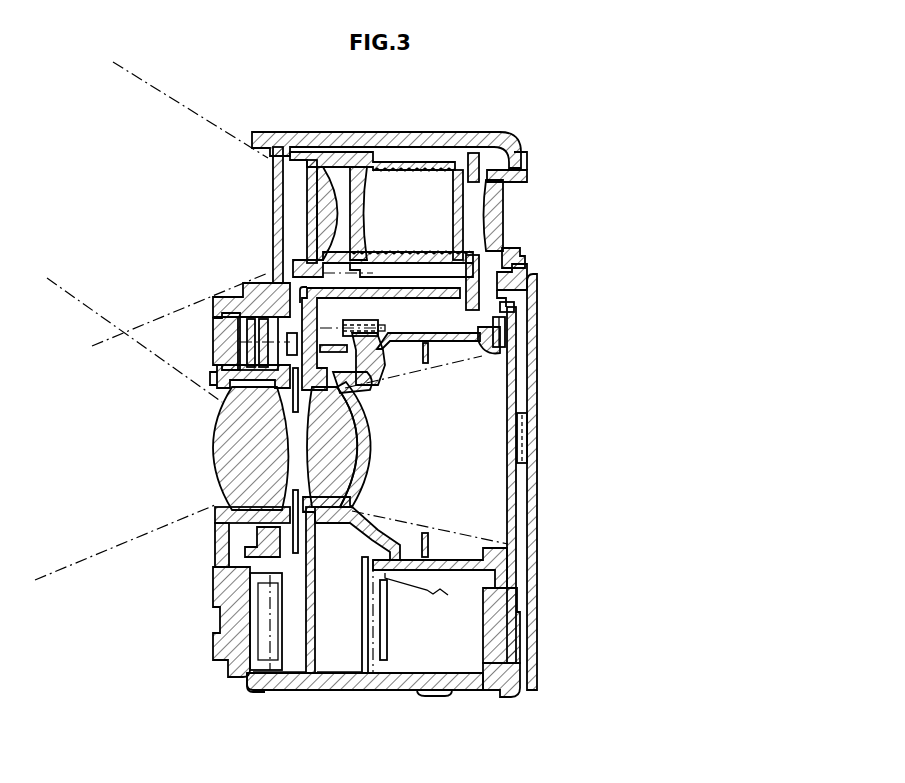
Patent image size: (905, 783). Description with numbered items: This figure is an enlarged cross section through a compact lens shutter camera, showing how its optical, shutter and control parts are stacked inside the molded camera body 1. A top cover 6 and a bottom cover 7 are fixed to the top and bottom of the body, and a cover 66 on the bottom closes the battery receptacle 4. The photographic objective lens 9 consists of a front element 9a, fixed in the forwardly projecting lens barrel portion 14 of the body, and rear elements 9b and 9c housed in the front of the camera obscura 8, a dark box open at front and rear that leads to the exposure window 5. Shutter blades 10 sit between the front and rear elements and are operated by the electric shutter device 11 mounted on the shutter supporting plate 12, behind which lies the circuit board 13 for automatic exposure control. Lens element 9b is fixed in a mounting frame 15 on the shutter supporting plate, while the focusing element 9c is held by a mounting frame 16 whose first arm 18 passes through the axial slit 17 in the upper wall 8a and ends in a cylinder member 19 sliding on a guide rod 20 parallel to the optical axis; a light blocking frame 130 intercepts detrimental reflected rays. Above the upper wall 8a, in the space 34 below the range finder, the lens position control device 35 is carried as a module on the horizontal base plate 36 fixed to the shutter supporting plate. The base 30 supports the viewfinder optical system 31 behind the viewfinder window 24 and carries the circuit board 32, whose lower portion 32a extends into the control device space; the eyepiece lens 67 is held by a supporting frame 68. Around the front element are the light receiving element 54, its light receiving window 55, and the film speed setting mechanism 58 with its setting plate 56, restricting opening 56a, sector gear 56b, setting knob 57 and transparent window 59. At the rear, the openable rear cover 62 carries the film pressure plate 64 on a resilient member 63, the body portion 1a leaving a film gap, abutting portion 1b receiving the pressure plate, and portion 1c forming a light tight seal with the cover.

The camera body 1 is at (522, 652).
The portion 1a is at (506, 332).
The abutting portion 1b is at (515, 307).
The portion 1c is at (521, 265).
The battery receptacle 4 is at (462, 668).
The exposure window 5 is at (508, 552).
The top cover 6 is at (383, 132).
The bottom cover 7 is at (368, 690).
The camera obscura 8 is at (364, 566).
The upper wall 8a is at (432, 342).
The photographic objective lens 9 is at (215, 452).
The front element 9a is at (265, 457).
The rear lens element 9b is at (343, 457).
The rear lens element 9c is at (372, 452).
The shutter blades 10 is at (290, 562).
The electric shutter device 11 is at (337, 656).
The shutter supporting plate 12 is at (305, 646).
The circuit board 13 is at (360, 654).
The lens barrel portion 14 is at (228, 380).
The mounting frame 15 is at (318, 525).
The mounting frame 16 is at (358, 522).
The axial slit 17 is at (386, 358).
The first arm 18 is at (366, 387).
The cylinder member 19 is at (374, 326).
The guide rod 20 is at (352, 310).
The viewfinder window 24 is at (273, 205).
The base 30 is at (425, 162).
The viewfinder optical system 31 is at (310, 220).
The circuit board 32 is at (483, 155).
The portion 32a is at (534, 292).
The space 34 is at (457, 332).
The lens position control device 35 is at (430, 268).
The base plate 36 is at (410, 292).
The light receiving element 54 is at (270, 290).
The light receiving window 55 is at (228, 340).
The film speed setting plate 56 is at (225, 512).
The restricting opening 56a is at (258, 337).
The sector gear 56b is at (252, 572).
The film speed setting knob 57 is at (240, 673).
The film speed setting mechanism 58 is at (250, 700).
The transparent window 59 is at (216, 555).
The rear cover 62 is at (538, 362).
The resilient member 63 is at (523, 465).
The film pressure plate 64 is at (514, 392).
The cover 66 is at (428, 695).
The eyepiece lens 67 is at (504, 212).
The supporting frame 68 is at (528, 174).
The light blocking frame 130 is at (429, 542).